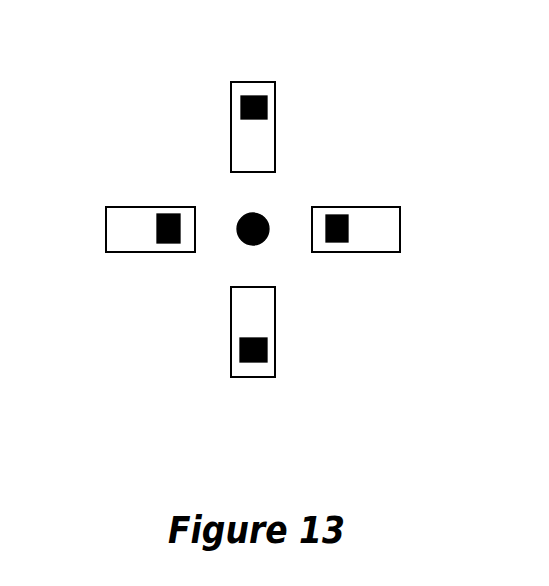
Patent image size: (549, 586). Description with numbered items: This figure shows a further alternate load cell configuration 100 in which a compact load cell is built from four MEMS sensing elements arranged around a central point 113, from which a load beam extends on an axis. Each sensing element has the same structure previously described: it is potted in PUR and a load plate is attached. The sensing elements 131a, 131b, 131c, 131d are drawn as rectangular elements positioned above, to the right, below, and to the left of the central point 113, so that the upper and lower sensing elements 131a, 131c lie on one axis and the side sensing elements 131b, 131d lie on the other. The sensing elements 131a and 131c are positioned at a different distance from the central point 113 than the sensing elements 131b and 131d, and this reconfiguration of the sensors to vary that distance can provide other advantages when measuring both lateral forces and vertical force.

The system 100 is at (358, 65).
The central element 113 is at (263, 217).
The sensing element 131a is at (248, 97).
The sensing element 131b is at (343, 215).
The sensing element 131c is at (250, 362).
The sensing element 131d is at (163, 213).